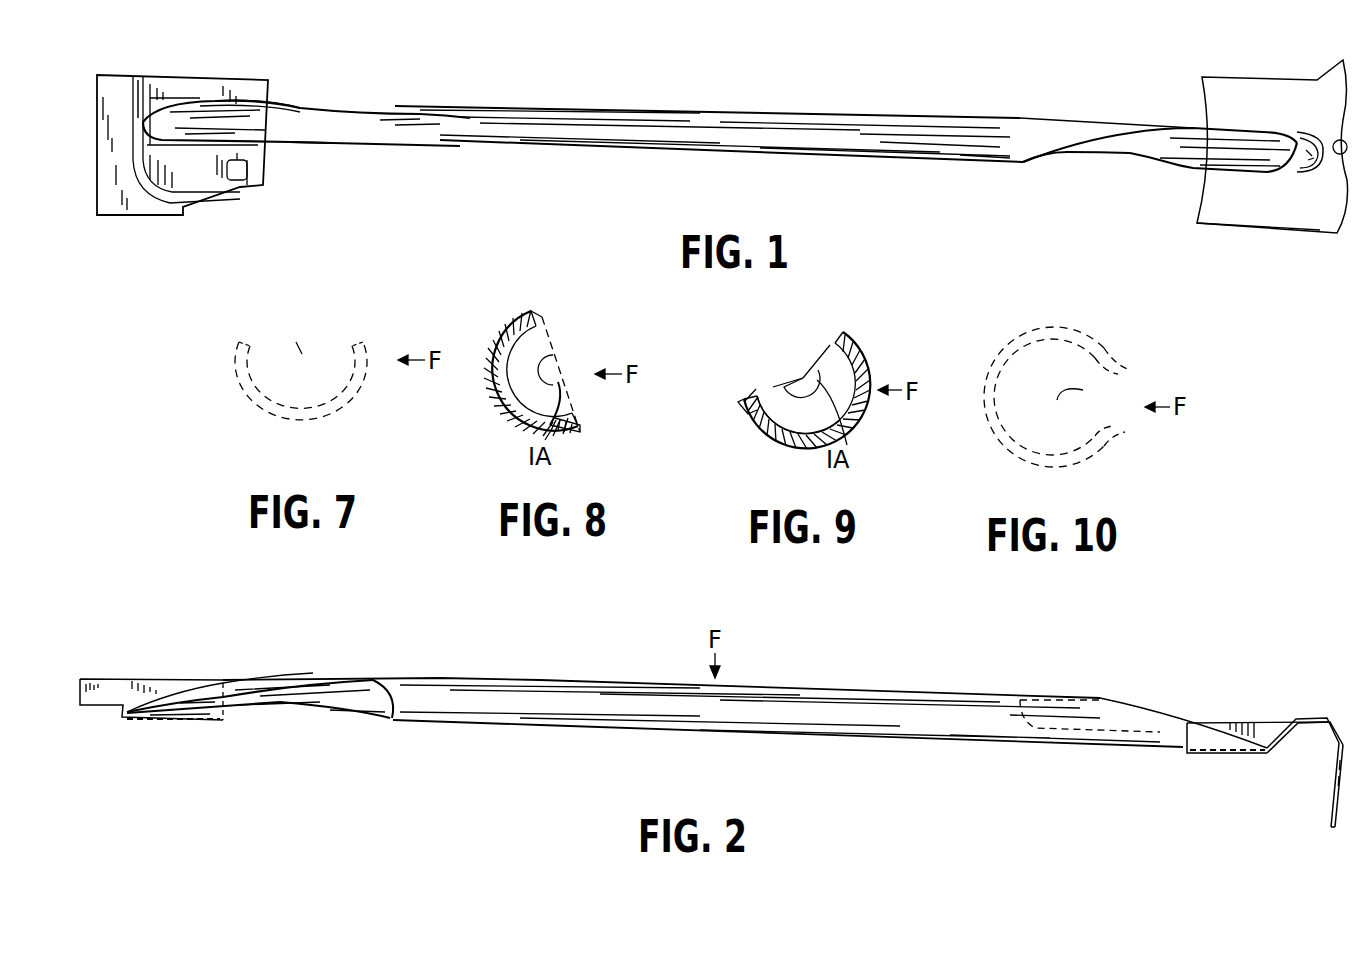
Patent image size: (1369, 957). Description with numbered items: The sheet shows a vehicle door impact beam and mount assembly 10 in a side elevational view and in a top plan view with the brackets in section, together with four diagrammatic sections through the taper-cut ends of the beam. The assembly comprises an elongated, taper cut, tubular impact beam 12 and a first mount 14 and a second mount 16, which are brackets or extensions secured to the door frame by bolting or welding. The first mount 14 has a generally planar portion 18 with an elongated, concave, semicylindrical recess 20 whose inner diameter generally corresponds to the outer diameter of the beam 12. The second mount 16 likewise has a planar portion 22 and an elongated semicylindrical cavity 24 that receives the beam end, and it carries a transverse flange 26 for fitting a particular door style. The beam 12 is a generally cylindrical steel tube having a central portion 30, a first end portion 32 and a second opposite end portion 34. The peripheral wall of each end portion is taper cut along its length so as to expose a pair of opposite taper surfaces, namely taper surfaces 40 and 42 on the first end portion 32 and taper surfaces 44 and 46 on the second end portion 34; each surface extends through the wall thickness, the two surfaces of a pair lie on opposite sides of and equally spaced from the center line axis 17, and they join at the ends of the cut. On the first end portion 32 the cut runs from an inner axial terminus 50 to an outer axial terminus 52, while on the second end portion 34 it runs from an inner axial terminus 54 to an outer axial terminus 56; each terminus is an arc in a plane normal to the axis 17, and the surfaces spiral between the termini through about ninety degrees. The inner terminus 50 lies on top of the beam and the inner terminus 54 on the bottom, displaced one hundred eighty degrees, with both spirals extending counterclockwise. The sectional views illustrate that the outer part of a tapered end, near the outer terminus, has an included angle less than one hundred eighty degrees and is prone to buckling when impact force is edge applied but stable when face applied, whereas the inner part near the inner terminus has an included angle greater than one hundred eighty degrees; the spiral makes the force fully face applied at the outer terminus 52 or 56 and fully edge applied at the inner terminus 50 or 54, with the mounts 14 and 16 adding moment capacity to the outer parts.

In FIG. 1, the vehicle impact beam and mount assembly 10 is at (940, 92).
In FIG. 2, the vehicle impact beam and mount assembly 10 is at (1105, 670).
In FIG. 1, the tubular impact beam 12 is at (618, 108).
In FIG. 2, the tubular impact beam 12 is at (510, 678).
In FIG. 1, the first mount 14 is at (205, 95).
In FIG. 1, the second mount 16 is at (1252, 92).
In FIG. 7, the center line axis 17 is at (299, 333).
In FIG. 8, the center line axis 17 is at (558, 370).
In FIG. 9, the center line axis 17 is at (802, 376).
In FIG. 10, the center line axis 17 is at (1079, 402).
In FIG. 1, the planar portion 18 is at (148, 205).
In FIG. 2, the planar portion 18 is at (100, 706).
In FIG. 2, the semicylindrical recess 20 is at (163, 721).
In FIG. 1, the planar portion 22 is at (1252, 215).
In FIG. 2, the planar portion 22 is at (1316, 720).
In FIG. 1, the semicylindrical cavity 24 is at (1318, 165).
In FIG. 2, the semicylindrical cavity 24 is at (1237, 754).
In FIG. 2, the transverse flange 26 is at (1333, 800).
In FIG. 1, the central portion 30 is at (960, 157).
In FIG. 1, the first end portion 32 is at (303, 126).
In FIG. 7, the first end portion 32 is at (350, 395).
In FIG. 8, the first end portion 32 is at (512, 412).
In FIG. 9, the first end portion 32 is at (756, 420).
In FIG. 10, the first end portion 32 is at (1000, 436).
In FIG. 1, the second end portion 34 is at (1127, 155).
In FIG. 1, the taper surface 40 is at (270, 105).
In FIG. 7, the taper surface 40 is at (353, 329).
In FIG. 8, the taper surface 40 is at (580, 428).
In FIG. 9, the taper surface 40 is at (845, 335).
In FIG. 10, the taper surface 40 is at (1105, 444).
In FIG. 1, the taper surface 42 is at (290, 143).
In FIG. 7, the taper surface 42 is at (235, 329).
In FIG. 8, the taper surface 42 is at (540, 312).
In FIG. 9, the taper surface 42 is at (742, 398).
In FIG. 10, the taper surface 42 is at (1122, 372).
In FIG. 1, the taper surface 44 is at (1198, 128).
In FIG. 1, the taper surface 46 is at (1185, 168).
In FIG. 1, the inner axial terminus 50 is at (418, 114).
In FIG. 2, the inner axial terminus 50 is at (372, 690).
In FIG. 1, the outer axial terminus 52 is at (138, 118).
In FIG. 1, the inner axial terminus 54 is at (1026, 163).
In FIG. 1, the outer axial terminus 56 is at (1308, 140).